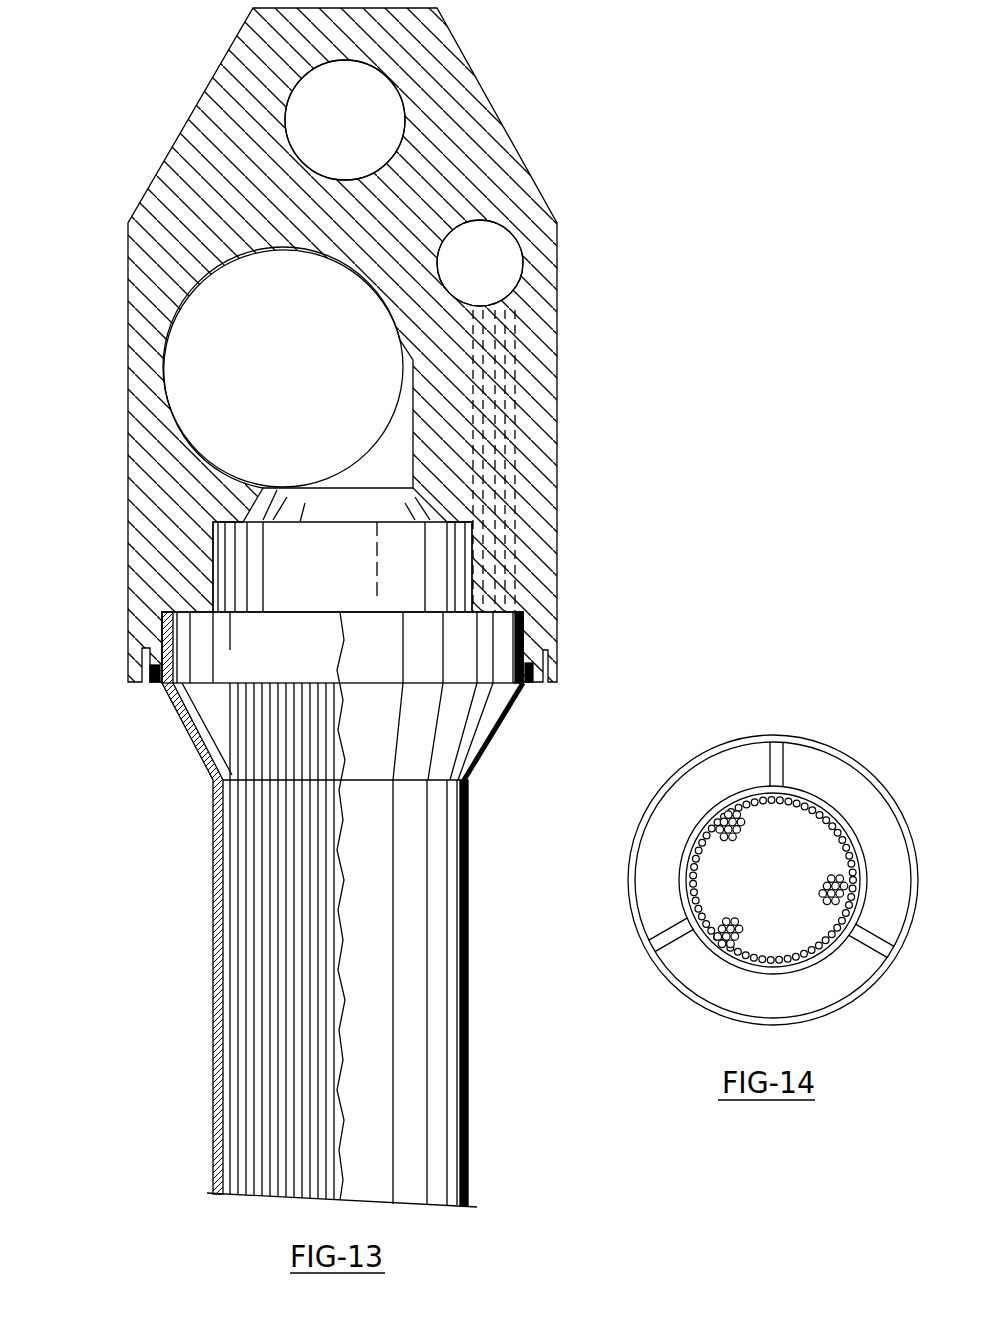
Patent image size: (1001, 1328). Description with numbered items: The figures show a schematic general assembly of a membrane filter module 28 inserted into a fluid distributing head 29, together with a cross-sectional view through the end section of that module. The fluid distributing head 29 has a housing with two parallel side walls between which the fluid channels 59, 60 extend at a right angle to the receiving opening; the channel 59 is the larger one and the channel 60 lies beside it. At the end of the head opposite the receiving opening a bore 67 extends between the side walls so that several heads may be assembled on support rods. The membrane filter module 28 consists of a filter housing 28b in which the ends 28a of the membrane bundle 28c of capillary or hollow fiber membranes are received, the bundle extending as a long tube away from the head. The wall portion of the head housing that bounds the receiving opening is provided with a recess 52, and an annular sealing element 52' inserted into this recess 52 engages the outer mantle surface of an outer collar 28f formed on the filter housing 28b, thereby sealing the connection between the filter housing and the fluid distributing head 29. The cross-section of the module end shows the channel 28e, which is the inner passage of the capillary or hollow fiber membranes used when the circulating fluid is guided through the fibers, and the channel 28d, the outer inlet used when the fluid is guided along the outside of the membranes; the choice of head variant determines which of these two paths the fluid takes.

In FIG. 13, the fluid distributing head 29 is at (527, 167).
In FIG. 13, the bore 67 is at (375, 108).
In FIG. 13, the fluid channel 60 is at (512, 265).
In FIG. 13, the fluid channel 59 is at (183, 357).
In FIG. 13, the membrane filter module 28 is at (336, 848).
In FIG. 13, the end of membrane bundle 28a is at (437, 572).
In FIG. 13, the filter housing 28b is at (467, 887).
In FIG. 13, the membrane bundle 28c is at (270, 965).
In FIG. 14, the channel 28d is at (660, 823).
In FIG. 14, the channel 28e is at (800, 830).
In FIG. 13, the outer collar 28f is at (162, 640).
In FIG. 13, the recess 52 is at (401, 635).
In FIG. 13, the annular sealing element 52' is at (384, 706).